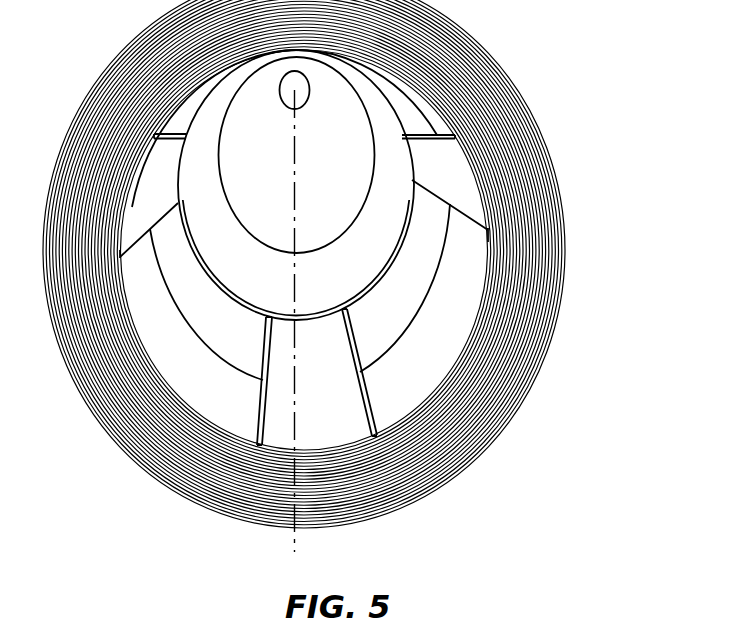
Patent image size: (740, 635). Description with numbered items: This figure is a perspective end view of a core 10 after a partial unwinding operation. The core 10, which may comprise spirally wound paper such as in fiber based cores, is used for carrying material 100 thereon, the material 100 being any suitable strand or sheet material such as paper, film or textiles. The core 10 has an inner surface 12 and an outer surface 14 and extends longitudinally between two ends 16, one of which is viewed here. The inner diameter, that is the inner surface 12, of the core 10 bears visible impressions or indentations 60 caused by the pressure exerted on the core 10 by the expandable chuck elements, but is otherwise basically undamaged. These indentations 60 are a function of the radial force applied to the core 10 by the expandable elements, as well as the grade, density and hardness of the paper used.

The material 100 is at (336, 276).
The core 10 is at (336, 264).
The outer surface 14 is at (472, 400).
The ends 16 is at (490, 157).
The inner surface 12 is at (350, 423).
The indentations 60 is at (442, 127).